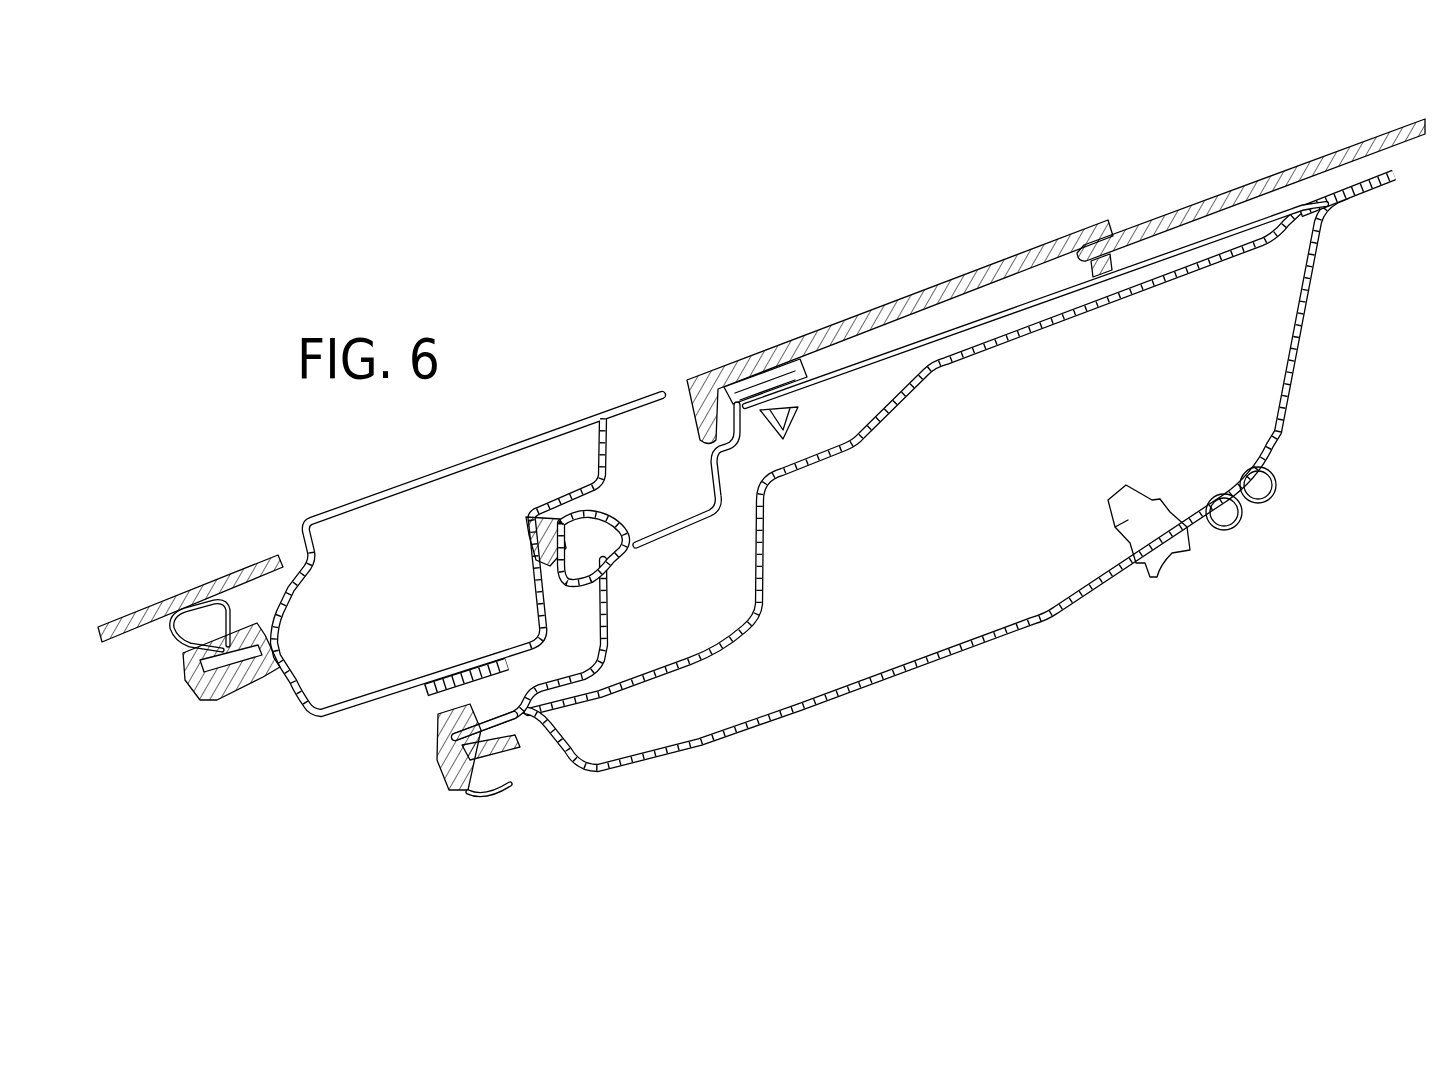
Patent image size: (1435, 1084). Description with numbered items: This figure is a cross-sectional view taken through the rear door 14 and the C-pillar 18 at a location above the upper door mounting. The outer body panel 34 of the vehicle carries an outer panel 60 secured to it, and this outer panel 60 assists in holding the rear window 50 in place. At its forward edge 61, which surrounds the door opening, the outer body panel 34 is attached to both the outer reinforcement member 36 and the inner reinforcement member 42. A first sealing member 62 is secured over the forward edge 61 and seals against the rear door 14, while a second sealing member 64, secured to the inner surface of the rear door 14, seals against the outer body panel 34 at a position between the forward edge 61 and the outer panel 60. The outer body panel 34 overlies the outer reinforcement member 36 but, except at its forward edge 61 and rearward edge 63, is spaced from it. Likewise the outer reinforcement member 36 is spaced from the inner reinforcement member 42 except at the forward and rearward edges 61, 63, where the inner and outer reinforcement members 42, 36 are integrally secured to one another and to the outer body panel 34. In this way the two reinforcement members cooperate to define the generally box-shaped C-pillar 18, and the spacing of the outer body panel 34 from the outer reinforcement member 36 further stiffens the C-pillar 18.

The rear door 14 is at (361, 530).
The C-pillar 18 is at (1324, 316).
The outer body panel 34 is at (609, 617).
The outer reinforcement member 36 is at (772, 593).
The inner reinforcement member 42 is at (1000, 642).
The rear window 50 is at (1293, 163).
The outer panel 60 is at (960, 273).
The forward edge 61 is at (520, 726).
The first sealing member 62 is at (479, 790).
The rearward edge 63 is at (1358, 196).
The second sealing member 64 is at (613, 508).